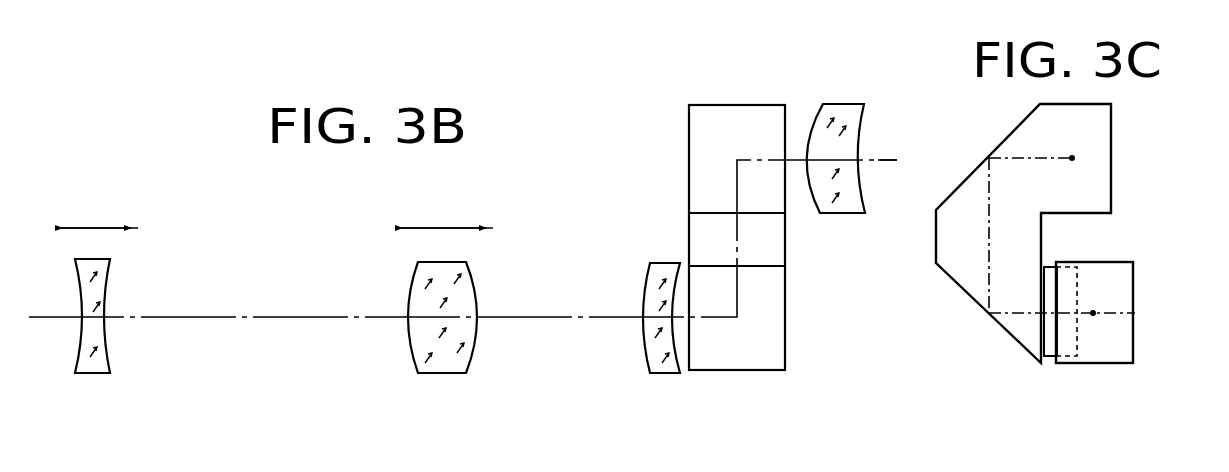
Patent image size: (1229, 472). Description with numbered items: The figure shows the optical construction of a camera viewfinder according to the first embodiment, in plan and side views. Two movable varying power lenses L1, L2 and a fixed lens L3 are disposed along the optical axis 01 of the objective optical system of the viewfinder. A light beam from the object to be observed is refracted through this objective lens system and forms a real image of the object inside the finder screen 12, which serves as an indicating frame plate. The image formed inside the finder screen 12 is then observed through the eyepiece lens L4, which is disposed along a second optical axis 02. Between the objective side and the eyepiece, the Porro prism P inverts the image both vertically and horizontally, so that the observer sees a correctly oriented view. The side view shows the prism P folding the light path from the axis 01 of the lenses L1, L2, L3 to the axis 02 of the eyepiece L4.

In FIG. 3B, the varying power lens L1 is at (92, 374).
In FIG. 3C, the varying power lens L1 is at (1119, 348).
In FIG. 3B, the varying power lens L2 is at (442, 365).
In FIG. 3C, the varying power lens L2 is at (1119, 348).
In FIG. 3B, the fixed lens L3 is at (655, 373).
In FIG. 3C, the fixed lens L3 is at (1101, 348).
In FIG. 3B, the eyepiece lens L4 is at (842, 207).
In FIG. 3B, the Porro prism P is at (707, 132).
In FIG. 3C, the Porro prism P is at (960, 270).
In FIG. 3B, the optical axis 01 is at (503, 318).
In FIG. 3C, the optical axis 01 is at (1093, 313).
In FIG. 3B, the optical axis 02 is at (878, 155).
In FIG. 3C, the optical axis 02 is at (1072, 158).
In FIG. 3C, the finder screen 12 is at (1050, 358).